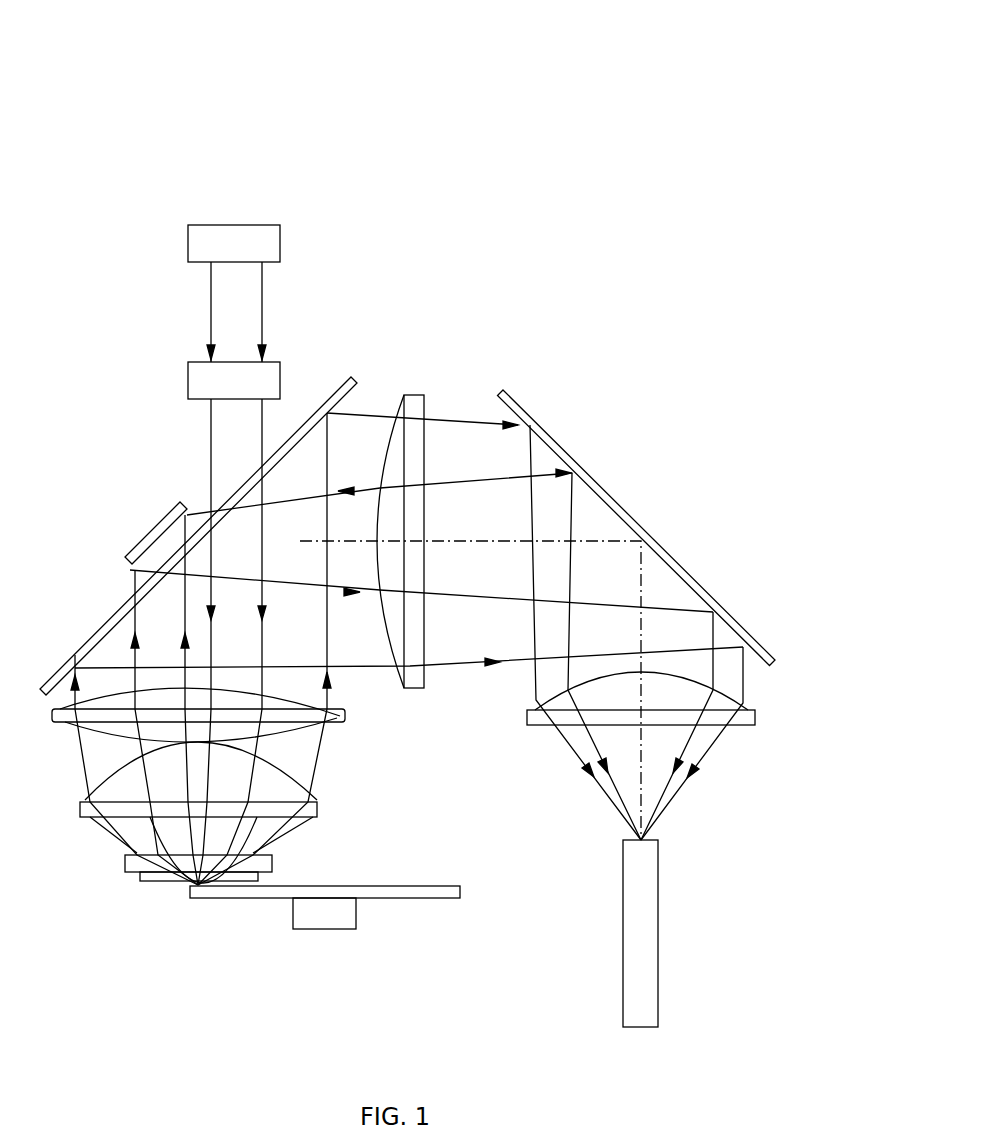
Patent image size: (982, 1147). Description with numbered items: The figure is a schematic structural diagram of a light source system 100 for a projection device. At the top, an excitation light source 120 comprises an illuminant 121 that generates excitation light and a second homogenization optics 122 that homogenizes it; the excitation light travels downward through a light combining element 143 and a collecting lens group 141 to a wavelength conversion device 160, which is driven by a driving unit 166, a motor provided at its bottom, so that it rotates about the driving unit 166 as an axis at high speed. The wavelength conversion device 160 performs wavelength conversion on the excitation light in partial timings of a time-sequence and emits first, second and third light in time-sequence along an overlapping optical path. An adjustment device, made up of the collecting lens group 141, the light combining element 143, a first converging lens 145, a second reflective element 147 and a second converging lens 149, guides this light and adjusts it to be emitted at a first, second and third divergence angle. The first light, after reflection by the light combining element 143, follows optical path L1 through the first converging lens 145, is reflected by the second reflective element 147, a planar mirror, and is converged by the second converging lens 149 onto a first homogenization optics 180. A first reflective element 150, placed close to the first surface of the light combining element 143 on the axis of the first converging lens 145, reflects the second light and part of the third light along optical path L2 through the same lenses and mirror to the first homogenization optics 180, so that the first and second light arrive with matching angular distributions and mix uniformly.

The light source system 100 is at (228, 63).
The excitation light source 120 is at (85, 233).
The illuminant 121 is at (213, 243).
The second homogenization optics 122 is at (203, 372).
The light combining element 143 is at (350, 378).
The first converging lens 145 is at (417, 393).
The second reflective element 147 is at (735, 620).
The second converging lens 149 is at (755, 707).
The collecting lens group 141 is at (322, 796).
The first reflective element 150 is at (162, 527).
The wavelength conversion device 160 is at (416, 900).
The driving unit 166 is at (323, 913).
The first homogenization optics 180 is at (640, 940).
The optical path L1 is at (453, 410).
The optical path L2 is at (547, 438).